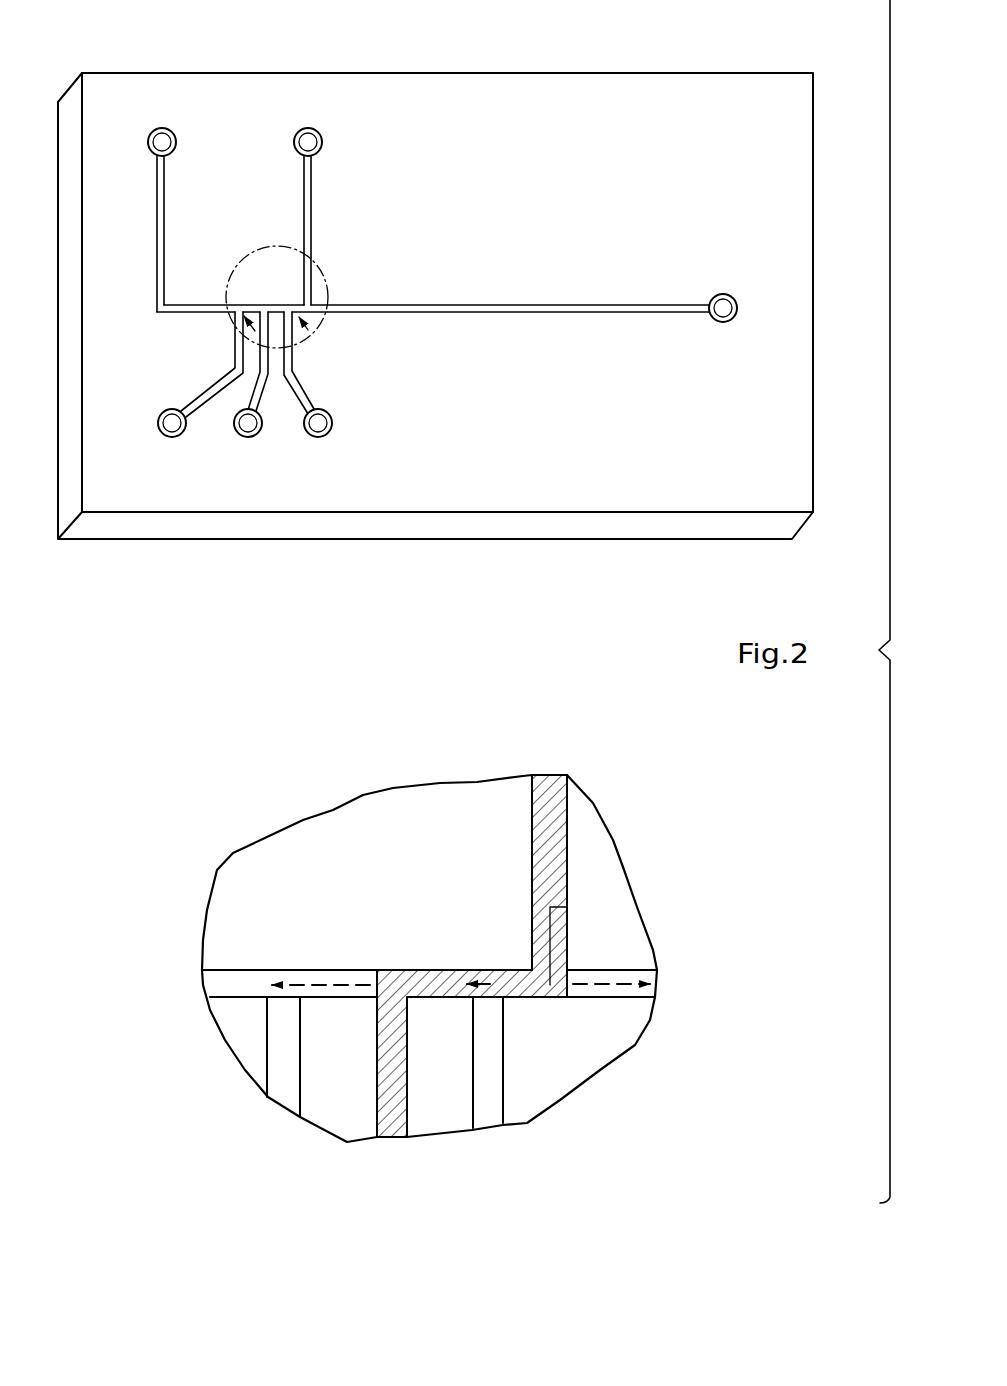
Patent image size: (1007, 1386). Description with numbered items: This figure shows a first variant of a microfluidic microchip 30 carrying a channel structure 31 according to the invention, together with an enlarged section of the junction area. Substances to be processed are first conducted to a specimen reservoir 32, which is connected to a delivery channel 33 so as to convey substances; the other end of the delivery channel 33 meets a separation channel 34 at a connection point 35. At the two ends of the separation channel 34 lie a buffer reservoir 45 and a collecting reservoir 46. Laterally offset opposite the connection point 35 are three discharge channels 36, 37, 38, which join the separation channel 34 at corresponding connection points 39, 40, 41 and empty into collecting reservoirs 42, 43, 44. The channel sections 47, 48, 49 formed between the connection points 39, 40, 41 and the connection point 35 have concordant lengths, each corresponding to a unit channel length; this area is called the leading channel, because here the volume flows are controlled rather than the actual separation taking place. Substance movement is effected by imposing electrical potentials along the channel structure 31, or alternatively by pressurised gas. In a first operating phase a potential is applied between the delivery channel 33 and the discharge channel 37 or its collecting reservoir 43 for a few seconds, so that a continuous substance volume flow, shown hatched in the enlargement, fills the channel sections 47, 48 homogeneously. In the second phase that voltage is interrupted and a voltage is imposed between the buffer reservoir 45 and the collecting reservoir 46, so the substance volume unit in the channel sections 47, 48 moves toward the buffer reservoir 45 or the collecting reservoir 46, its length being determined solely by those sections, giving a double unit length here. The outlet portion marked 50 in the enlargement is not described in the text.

The microfluidic microchip 30 is at (787, 187).
The channel structure 31 is at (440, 230).
The specimen reservoir 32 is at (319, 132).
The delivery channel 33 is at (312, 198).
The separation channel 34 is at (524, 313).
The connection point 35 is at (311, 302).
The discharge channel 36 is at (307, 393).
The discharge channel 37 is at (252, 393).
The discharge channel 38 is at (190, 397).
The connection point 39 is at (288, 303).
The connection point 40 is at (262, 303).
The connection point 41 is at (238, 303).
The collecting reservoir 42 is at (318, 437).
The collecting reservoir 43 is at (245, 437).
The collecting reservoir 44 is at (168, 437).
The buffer reservoir 45 is at (163, 128).
The collecting reservoir 46 is at (722, 294).
The channel section 47 is at (308, 330).
The channel section 48 is at (276, 316).
The channel section 49 is at (255, 331).
The outlet channel section 50 is at (608, 985).